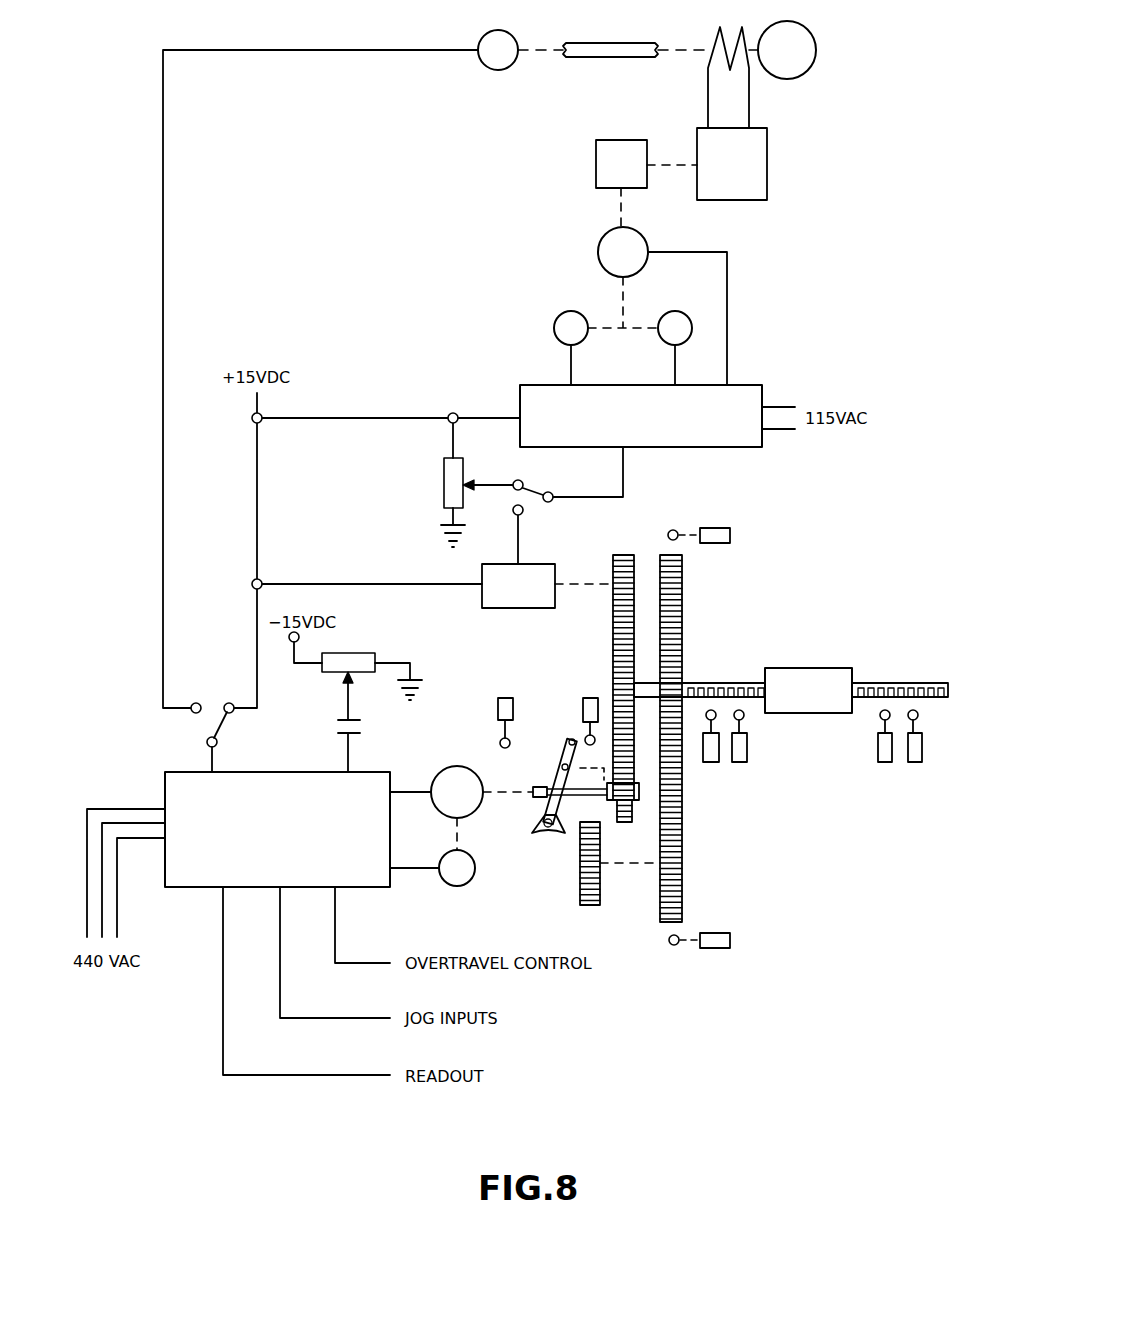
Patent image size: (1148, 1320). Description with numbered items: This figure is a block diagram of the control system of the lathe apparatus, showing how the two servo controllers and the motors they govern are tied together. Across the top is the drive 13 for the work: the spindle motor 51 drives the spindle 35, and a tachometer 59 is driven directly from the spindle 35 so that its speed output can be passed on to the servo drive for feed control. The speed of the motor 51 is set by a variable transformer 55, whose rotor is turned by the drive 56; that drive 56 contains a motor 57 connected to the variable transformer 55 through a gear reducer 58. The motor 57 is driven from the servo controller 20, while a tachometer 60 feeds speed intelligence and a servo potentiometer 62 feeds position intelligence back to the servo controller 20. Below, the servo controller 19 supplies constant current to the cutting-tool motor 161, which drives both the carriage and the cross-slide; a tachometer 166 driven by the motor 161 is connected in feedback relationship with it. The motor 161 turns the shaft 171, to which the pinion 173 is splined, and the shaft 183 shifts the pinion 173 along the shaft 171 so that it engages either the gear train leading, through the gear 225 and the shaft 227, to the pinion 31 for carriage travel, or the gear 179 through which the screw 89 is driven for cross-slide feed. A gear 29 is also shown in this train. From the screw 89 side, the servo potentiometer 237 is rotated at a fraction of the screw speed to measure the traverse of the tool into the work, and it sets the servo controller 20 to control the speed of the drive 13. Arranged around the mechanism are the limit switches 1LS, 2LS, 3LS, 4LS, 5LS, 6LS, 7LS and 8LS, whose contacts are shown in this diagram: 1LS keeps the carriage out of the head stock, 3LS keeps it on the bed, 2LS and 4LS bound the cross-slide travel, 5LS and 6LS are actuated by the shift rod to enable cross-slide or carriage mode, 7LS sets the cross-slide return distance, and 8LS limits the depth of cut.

The drive 13 is at (779, 65).
The motor 51 is at (808, 68).
The tachometer 59 is at (507, 45).
The spindle 35 is at (607, 47).
The gear reducer 58 is at (627, 146).
The variable transformer 55 is at (744, 167).
The drive 56 is at (614, 245).
The motor 57 is at (636, 246).
The servo potentiometer 62 is at (570, 316).
The tachometer 60 is at (678, 316).
The servo controller 20 is at (636, 418).
The potentiometer 237 is at (537, 596).
The servo controller 19 is at (284, 842).
The motor 161 is at (455, 772).
The tachometer 166 is at (469, 880).
The gear 179 is at (613, 650).
The gear 29 is at (682, 632).
The pinion 31 is at (682, 865).
The screw 89 is at (900, 683).
The shaft 171 is at (590, 797).
The pinion 173 is at (620, 822).
The shaft 183 is at (568, 737).
The gear 225 is at (580, 868).
The shaft 227 is at (636, 865).
The limit switch 1LS is at (722, 528).
The limit switch 2LS is at (919, 760).
The limit switch 3LS is at (722, 935).
The limit switch 4LS is at (711, 762).
The limit switch 5LS is at (588, 700).
The limit switch 6LS is at (507, 697).
The limit switch 7LS is at (745, 757).
The limit switch 8LS is at (888, 760).